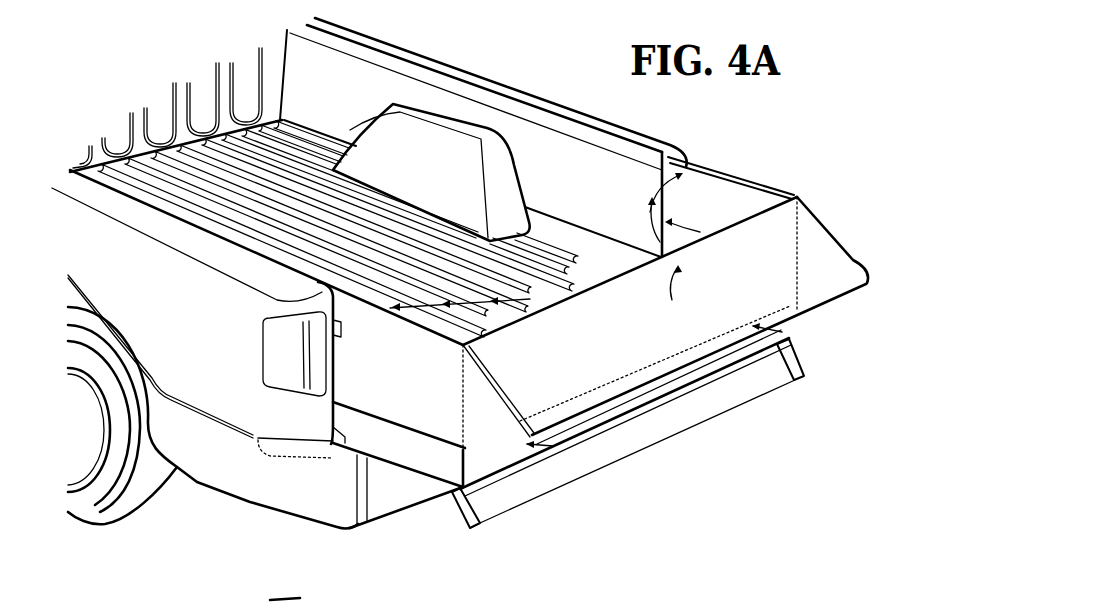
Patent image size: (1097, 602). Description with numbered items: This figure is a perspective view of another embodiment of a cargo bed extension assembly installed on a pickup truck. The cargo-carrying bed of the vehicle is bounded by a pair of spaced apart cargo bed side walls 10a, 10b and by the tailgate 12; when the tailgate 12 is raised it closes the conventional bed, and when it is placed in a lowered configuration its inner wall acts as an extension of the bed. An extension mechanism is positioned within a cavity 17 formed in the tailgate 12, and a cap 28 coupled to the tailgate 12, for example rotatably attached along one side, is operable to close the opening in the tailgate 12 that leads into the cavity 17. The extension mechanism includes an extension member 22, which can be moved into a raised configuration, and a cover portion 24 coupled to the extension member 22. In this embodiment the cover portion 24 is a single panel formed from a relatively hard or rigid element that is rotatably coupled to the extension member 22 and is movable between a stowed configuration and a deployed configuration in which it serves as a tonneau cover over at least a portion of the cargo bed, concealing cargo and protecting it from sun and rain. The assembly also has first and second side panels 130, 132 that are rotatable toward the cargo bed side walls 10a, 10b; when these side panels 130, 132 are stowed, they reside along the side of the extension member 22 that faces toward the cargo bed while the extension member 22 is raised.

The cargo bed side wall 10a is at (218, 393).
The cargo bed side wall 10b is at (462, 72).
The tailgate 12 is at (407, 455).
The cavity 17 is at (593, 457).
The extension member 22 is at (492, 427).
The cover portion 24 is at (853, 262).
The cap 28 is at (453, 508).
The first side panel 130 is at (380, 383).
The second side panel 132 is at (732, 197).